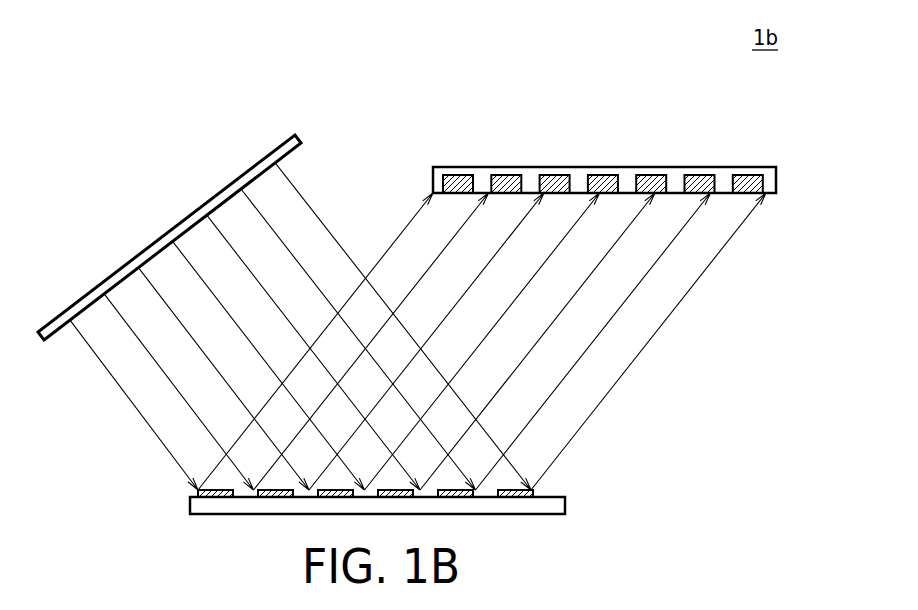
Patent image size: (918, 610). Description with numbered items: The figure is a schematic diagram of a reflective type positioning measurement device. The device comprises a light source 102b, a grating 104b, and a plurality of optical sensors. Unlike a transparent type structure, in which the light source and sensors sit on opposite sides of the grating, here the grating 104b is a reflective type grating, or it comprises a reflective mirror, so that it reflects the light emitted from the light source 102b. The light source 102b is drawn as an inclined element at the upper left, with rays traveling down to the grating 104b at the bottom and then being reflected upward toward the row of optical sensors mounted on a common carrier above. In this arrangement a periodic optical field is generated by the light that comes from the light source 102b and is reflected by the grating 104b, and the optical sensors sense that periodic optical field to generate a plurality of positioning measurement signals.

The light source 102b is at (295, 136).
The grating 104b is at (566, 505).